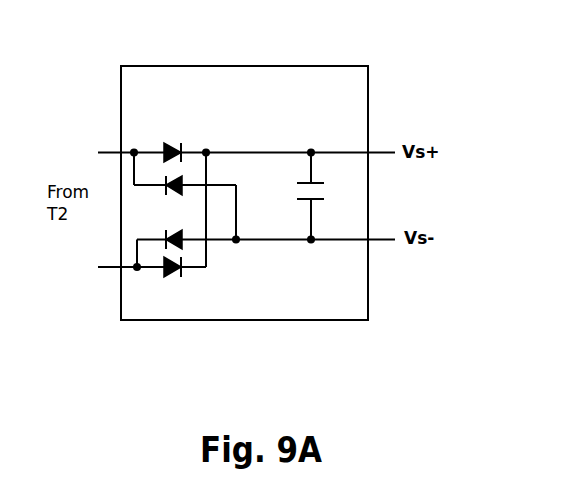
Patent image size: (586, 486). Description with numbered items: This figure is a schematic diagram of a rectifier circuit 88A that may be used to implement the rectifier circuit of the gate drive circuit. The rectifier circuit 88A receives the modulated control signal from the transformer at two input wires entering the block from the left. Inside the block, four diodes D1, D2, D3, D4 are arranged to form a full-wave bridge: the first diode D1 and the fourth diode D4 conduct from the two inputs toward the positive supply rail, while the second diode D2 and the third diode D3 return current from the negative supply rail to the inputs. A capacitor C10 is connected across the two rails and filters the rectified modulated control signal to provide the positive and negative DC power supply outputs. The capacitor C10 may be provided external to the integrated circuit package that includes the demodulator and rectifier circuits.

The rectifier circuit 88A is at (171, 97).
The diode D1 is at (170, 138).
The diode D2 is at (175, 196).
The diode D3 is at (162, 235).
The diode D4 is at (175, 280).
The capacitor C10 is at (331, 196).